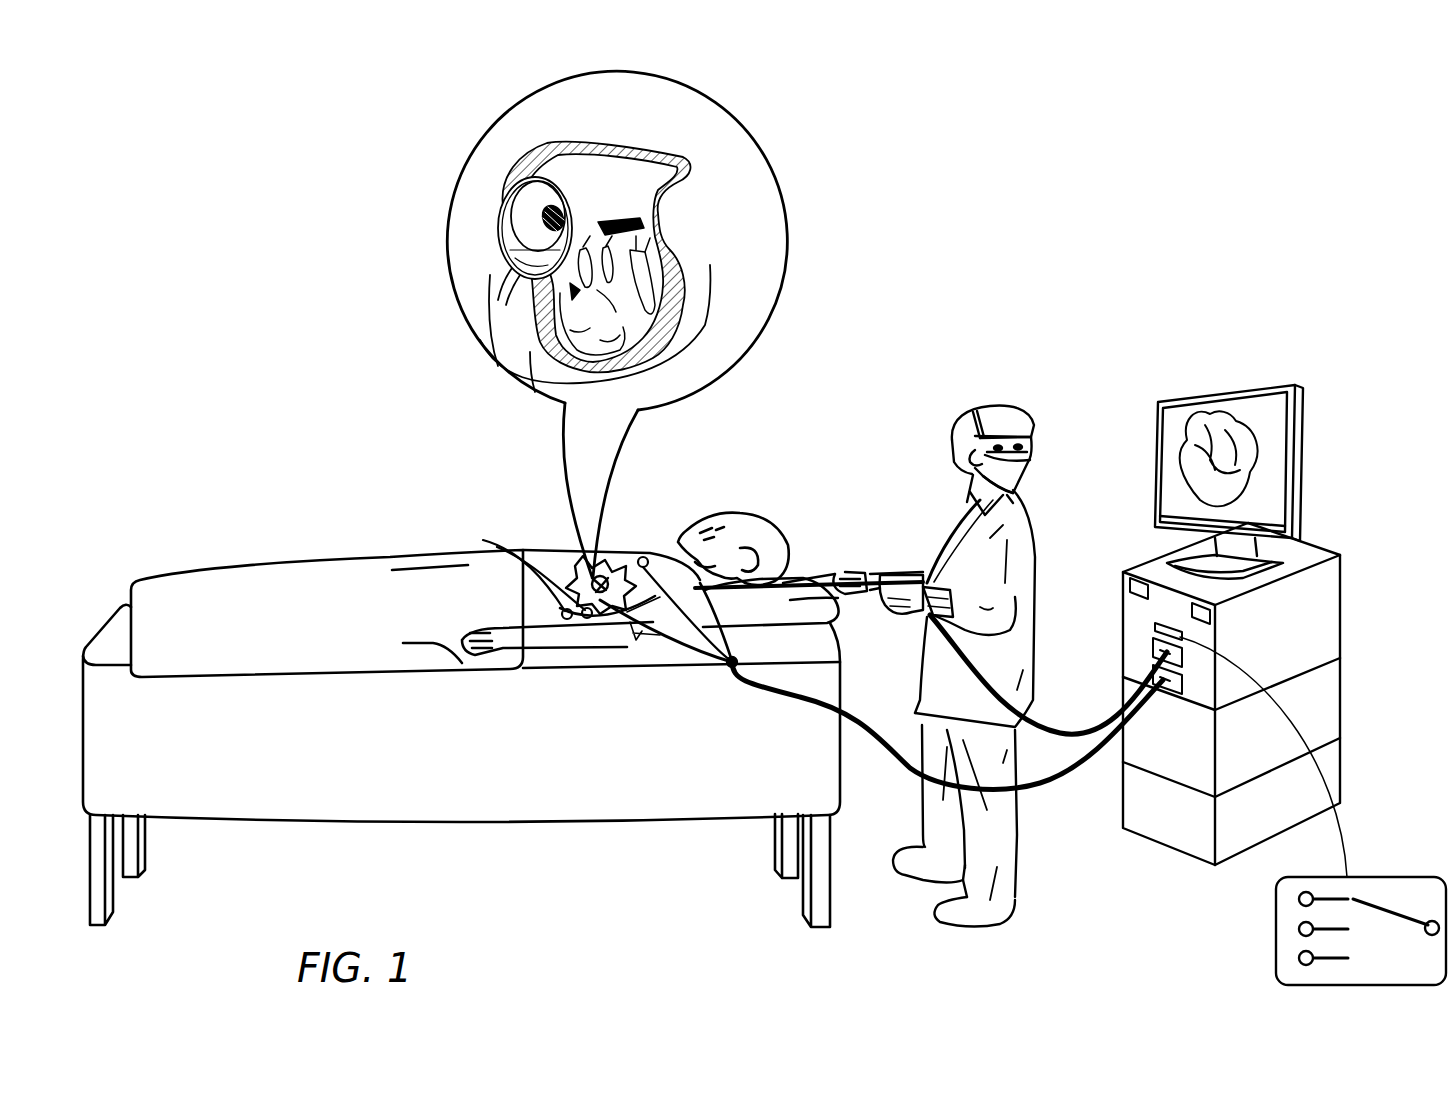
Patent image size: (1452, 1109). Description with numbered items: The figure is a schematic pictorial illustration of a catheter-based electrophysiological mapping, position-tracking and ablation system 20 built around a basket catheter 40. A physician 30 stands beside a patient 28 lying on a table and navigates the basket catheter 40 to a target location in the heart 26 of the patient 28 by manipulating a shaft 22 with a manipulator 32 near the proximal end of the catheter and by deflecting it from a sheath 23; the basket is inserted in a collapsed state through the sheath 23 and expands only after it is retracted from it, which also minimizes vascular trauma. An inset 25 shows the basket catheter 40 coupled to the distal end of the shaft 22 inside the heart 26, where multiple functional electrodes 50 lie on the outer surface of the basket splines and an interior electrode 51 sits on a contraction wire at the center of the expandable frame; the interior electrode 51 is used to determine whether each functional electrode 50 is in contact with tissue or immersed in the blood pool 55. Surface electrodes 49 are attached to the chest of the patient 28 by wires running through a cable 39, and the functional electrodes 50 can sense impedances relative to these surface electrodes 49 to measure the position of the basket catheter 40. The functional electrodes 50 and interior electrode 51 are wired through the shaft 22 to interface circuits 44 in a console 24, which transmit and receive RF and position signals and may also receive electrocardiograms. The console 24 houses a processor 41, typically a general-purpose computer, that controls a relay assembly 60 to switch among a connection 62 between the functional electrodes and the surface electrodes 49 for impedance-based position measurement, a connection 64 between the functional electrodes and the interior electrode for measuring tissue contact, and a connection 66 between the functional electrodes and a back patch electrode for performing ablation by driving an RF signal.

The catheter-based EP mapping, position-tracking and ablation system 20 is at (1180, 230).
The shaft 22 is at (1070, 723).
The sheath 23 is at (816, 582).
The console 24 is at (1336, 486).
The inset 25 is at (452, 297).
The heart 26 is at (593, 577).
The patient 28 is at (766, 521).
The physician 30 is at (1006, 410).
The manipulator 32 is at (886, 577).
The cable 39 is at (879, 748).
The basket catheter 40 is at (549, 215).
The processor 41 is at (1343, 696).
The interface circuits 44 is at (1125, 611).
The surface electrodes 49 is at (483, 545).
The functional electrodes 50 is at (542, 221).
The interior electrode 51 is at (526, 223).
The blood pool 55 is at (553, 204).
The relay assembly 60 is at (1152, 632).
The connection 62 is at (1298, 903).
The connection 64 is at (1298, 933).
The connection 66 is at (1298, 962).